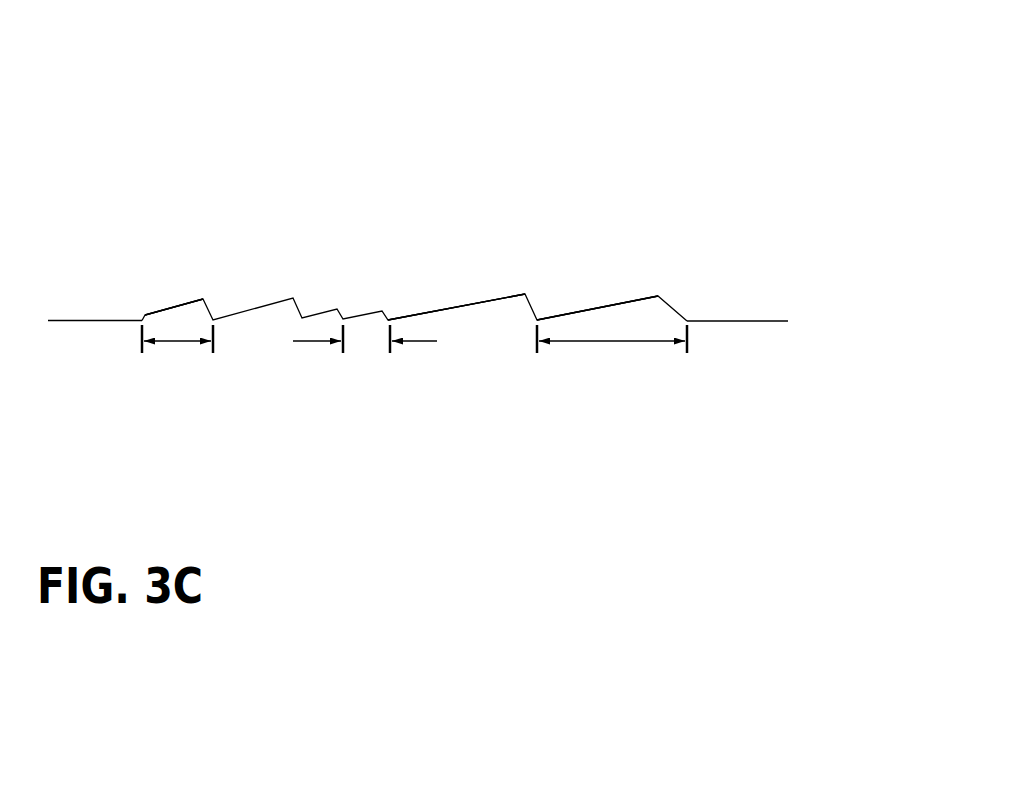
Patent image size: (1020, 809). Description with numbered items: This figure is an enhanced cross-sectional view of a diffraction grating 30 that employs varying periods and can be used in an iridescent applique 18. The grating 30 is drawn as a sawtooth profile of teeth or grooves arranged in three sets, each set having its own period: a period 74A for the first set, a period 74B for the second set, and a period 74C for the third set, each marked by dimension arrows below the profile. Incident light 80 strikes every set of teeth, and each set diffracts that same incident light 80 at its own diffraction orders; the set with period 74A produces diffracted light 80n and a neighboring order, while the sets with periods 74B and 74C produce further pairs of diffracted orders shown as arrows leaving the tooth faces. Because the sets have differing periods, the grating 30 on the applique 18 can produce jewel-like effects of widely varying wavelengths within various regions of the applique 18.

The applique 18 is at (727, 201).
The diffraction grating 30 is at (674, 151).
The incident light 80 is at (152, 308).
The diffracted light 80n is at (160, 305).
The period 74A is at (175, 343).
The period 74B is at (313, 343).
The period 74C is at (593, 343).